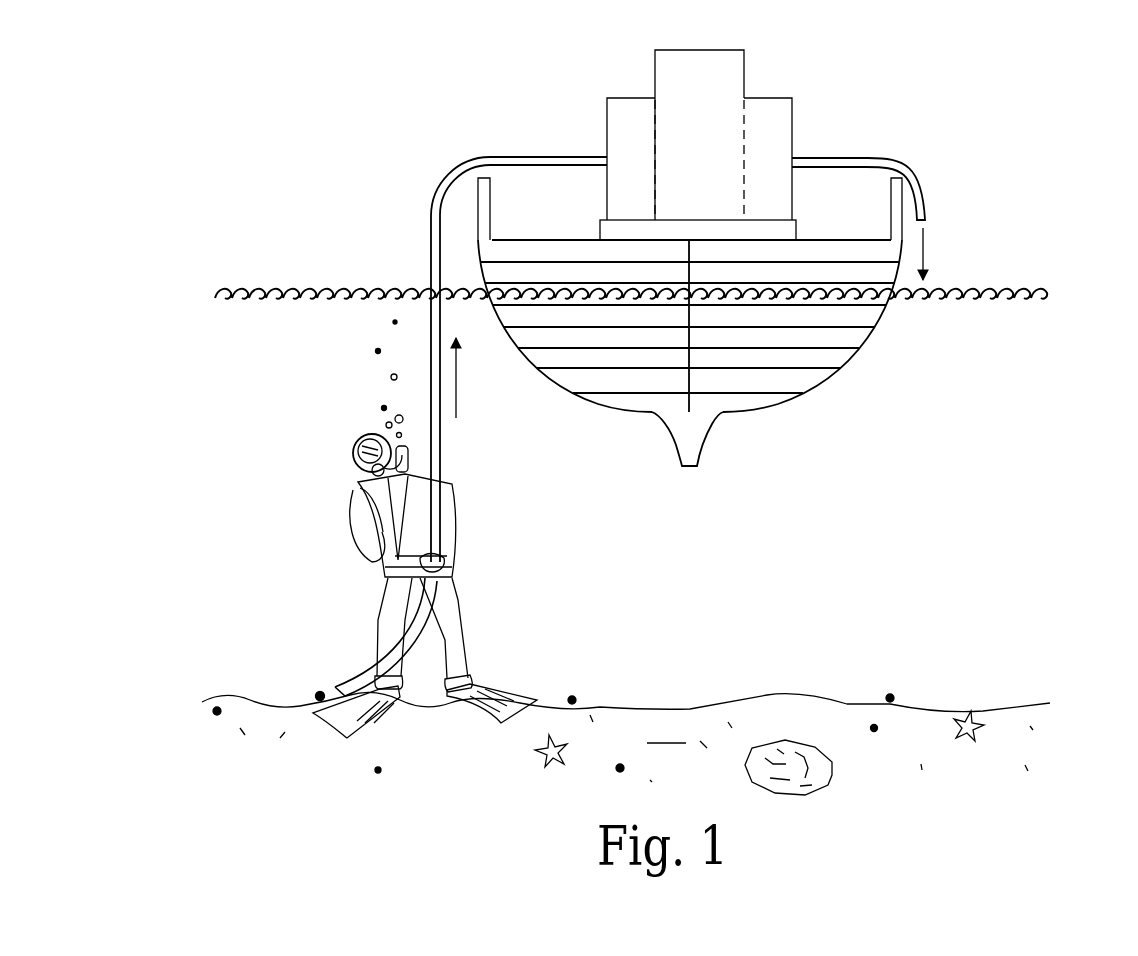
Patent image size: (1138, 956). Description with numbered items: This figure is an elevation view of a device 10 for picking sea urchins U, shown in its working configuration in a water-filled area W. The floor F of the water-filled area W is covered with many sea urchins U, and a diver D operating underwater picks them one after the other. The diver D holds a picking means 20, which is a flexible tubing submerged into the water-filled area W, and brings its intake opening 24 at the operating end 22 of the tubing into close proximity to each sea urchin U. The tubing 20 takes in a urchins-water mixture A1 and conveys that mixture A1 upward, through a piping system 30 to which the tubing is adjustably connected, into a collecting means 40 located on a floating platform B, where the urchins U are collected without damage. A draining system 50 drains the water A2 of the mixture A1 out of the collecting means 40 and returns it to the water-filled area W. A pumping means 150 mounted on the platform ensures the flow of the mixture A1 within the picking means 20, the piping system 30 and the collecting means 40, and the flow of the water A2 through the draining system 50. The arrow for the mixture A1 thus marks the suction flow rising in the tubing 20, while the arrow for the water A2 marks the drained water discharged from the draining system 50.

The device 10 is at (415, 151).
The picking means 20 is at (440, 442).
The operating end 22 is at (360, 668).
The intake opening 24 is at (320, 696).
The piping system 30 is at (630, 105).
The collecting means 40 is at (718, 100).
The draining system 50 is at (922, 192).
The pumping means 150 is at (784, 135).
The diver D is at (357, 508).
The floating platform B is at (771, 341).
The water-filled area W is at (876, 552).
The sea urchins U is at (320, 696).
The floor F is at (702, 720).
The urchins-water mixture A1 is at (477, 378).
The water A2 is at (948, 254).